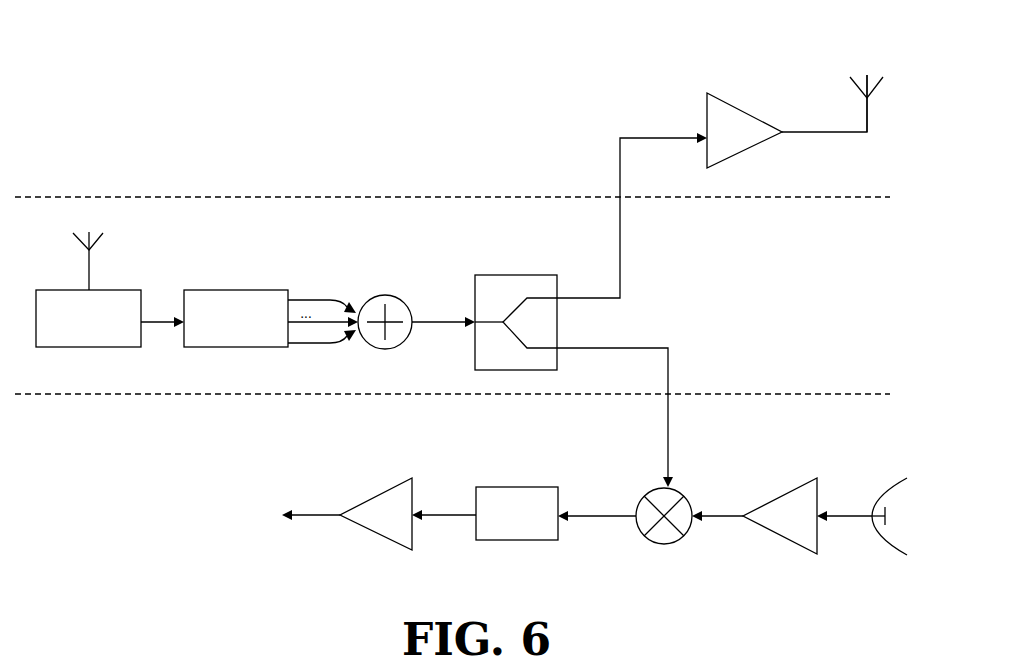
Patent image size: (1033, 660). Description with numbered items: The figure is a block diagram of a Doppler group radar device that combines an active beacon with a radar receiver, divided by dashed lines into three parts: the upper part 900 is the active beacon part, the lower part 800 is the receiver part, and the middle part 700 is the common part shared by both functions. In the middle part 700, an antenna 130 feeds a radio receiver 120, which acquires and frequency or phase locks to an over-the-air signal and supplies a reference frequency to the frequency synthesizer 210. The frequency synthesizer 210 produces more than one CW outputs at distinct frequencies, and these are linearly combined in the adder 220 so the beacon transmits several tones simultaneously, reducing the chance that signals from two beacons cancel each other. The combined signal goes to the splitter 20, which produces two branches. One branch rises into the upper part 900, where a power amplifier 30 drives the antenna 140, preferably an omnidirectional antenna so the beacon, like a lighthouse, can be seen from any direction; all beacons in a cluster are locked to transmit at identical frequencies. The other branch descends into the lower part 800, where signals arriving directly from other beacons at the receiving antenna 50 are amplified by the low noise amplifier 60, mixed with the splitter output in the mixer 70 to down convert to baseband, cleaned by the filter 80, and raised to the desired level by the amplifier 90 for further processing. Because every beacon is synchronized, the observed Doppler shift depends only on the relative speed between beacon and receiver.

The splitter 20 is at (500, 275).
The power amplifier 30 is at (725, 102).
The receiving antenna 50 is at (892, 488).
The low noise amplifier 60 is at (763, 502).
The mixer 70 is at (637, 507).
The filter 80 is at (476, 510).
The amplifier 90 is at (357, 503).
The radio receiver 120 is at (50, 290).
The antenna 130 is at (107, 240).
The antenna 140 is at (855, 78).
The frequency synthesizer 210 is at (253, 290).
The adder 220 is at (375, 297).
The middle part 700 is at (695, 269).
The lower part 800 is at (223, 479).
The upper part 900 is at (530, 93).